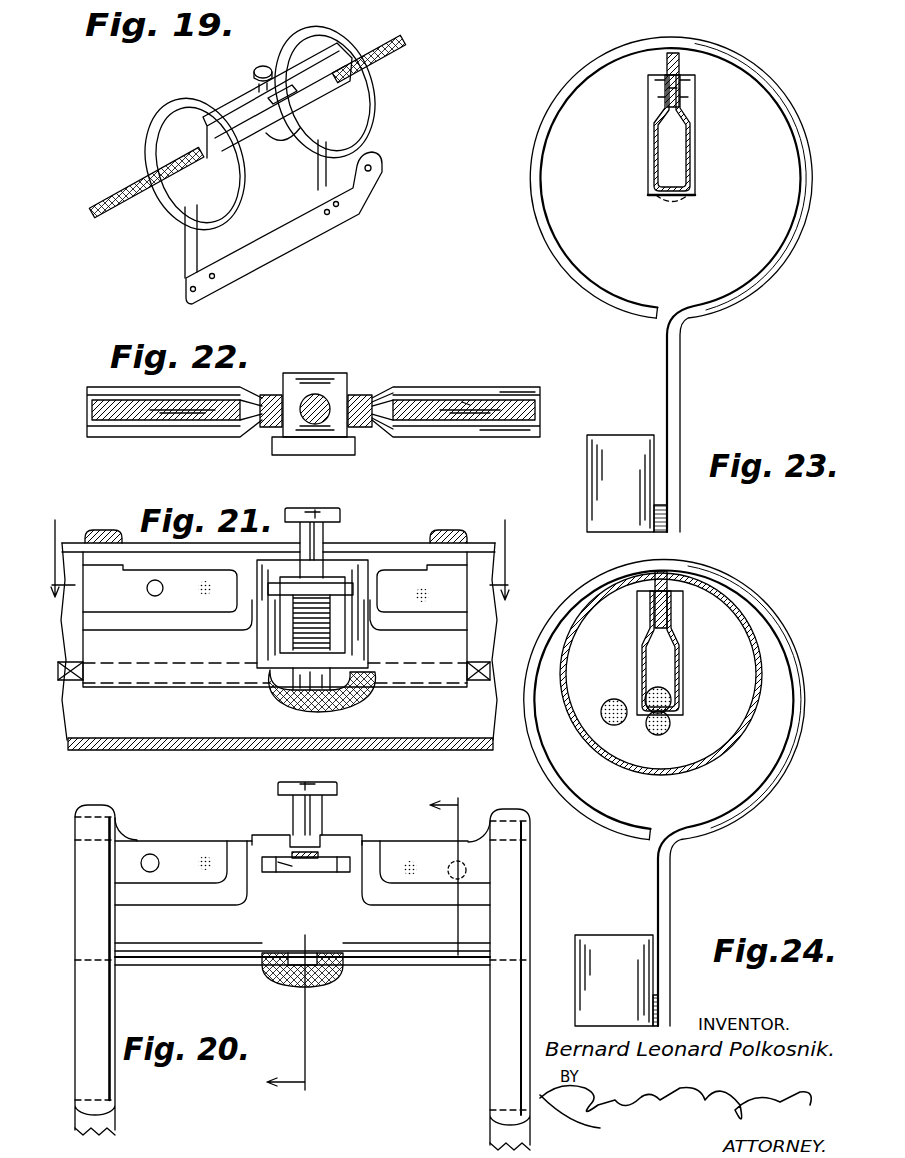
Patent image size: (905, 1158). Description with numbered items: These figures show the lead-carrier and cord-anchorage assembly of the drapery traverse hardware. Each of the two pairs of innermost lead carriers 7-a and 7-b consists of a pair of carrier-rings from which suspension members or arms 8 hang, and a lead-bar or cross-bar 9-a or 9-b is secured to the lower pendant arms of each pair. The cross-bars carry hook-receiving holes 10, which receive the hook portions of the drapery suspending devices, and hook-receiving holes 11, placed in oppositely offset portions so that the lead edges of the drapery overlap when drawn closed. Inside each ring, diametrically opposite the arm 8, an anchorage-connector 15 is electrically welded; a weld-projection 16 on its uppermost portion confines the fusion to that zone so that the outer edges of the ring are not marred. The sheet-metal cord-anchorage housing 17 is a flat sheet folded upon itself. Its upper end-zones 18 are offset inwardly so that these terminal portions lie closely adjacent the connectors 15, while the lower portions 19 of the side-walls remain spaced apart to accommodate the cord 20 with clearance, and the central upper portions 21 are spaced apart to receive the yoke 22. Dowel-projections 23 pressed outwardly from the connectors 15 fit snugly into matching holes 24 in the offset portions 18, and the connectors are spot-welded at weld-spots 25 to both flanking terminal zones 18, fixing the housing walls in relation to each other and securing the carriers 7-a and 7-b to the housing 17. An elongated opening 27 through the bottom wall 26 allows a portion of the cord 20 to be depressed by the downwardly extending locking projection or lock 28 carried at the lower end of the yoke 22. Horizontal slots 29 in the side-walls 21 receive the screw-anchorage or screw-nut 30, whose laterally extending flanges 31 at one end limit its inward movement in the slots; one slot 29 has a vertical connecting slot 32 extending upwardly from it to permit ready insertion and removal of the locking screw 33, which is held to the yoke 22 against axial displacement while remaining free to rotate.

In FIG. 21, the lead carrier 7-a is at (104, 530).
In FIG. 20, the lead carrier 7-a is at (97, 810).
In FIG. 19, the lead carrier 7-b is at (160, 110).
In FIG. 20, the suspension member or arm 8 is at (97, 1121).
In FIG. 23, the suspension member or arm 8 is at (676, 378).
In FIG. 24, the suspension member or arm 8 is at (664, 890).
In FIG. 24, the lead-bar or cross-bar 9-a is at (652, 935).
In FIG. 19, the lead-bar or cross-bar 9-b is at (294, 243).
In FIG. 19, the hook-receiving holes 10 is at (215, 277).
In FIG. 19, the hook-receiving holes 11 is at (372, 171).
In FIG. 22, the anchorage-connector 15 is at (90, 405).
In FIG. 23, the weld-projection 16 is at (672, 53).
In FIG. 19, the cord-anchorage housing 17 is at (240, 143).
In FIG. 21, the cord-anchorage housing 17 is at (398, 555).
In FIG. 20, the cord-anchorage housing 17 is at (420, 974).
In FIG. 23, the cord-anchorage housing 17 is at (708, 193).
In FIG. 22, the upper end-zones or terminal portions 18 is at (520, 398).
In FIG. 23, the upper end-zones or terminal portions 18 is at (660, 82).
In FIG. 22, the lower portions of the side-walls 19 is at (487, 440).
In FIG. 23, the lower portions of the side-walls 19 is at (647, 162).
In FIG. 19, the cord 20 is at (400, 50).
In FIG. 20, the cord 20 is at (320, 983).
In FIG. 24, the cord 20 is at (665, 697).
In FIG. 22, the central upper portions of the side-walls 21 is at (380, 389).
In FIG. 19, the yoke 22 is at (258, 80).
In FIG. 22, the yoke 22 is at (274, 394).
In FIG. 21, the yoke 22 is at (287, 549).
In FIG. 22, the dowel-projections 23 is at (465, 409).
In FIG. 20, the dowel-projections 23 is at (158, 858).
In FIG. 23, the dowel-projections 23 is at (687, 92).
In FIG. 22, the matching holes 24 is at (155, 425).
In FIG. 21, the matching holes 24 is at (147, 590).
In FIG. 20, the matching holes 24 is at (148, 855).
In FIG. 22, the weld-spots 25 is at (220, 423).
In FIG. 21, the weld-spots 25 is at (208, 598).
In FIG. 20, the bottom wall 26 is at (191, 966).
In FIG. 20, the elongated opening 27 is at (337, 955).
In FIG. 23, the elongated opening 27 is at (672, 206).
In FIG. 24, the elongated opening 27 is at (668, 718).
In FIG. 21, the locking projection or lock 28 is at (311, 692).
In FIG. 22, the horizontal slots 29 is at (351, 394).
In FIG. 20, the horizontal slots 29 is at (290, 874).
In FIG. 19, the screw-anchorage or screw-nut 30 is at (282, 100).
In FIG. 22, the screw-anchorage or screw-nut 30 is at (317, 372).
In FIG. 20, the screw-anchorage or screw-nut 30 is at (330, 873).
In FIG. 22, the flanges or projections 31 is at (270, 450).
In FIG. 20, the vertical connecting slot 32 is at (287, 840).
In FIG. 22, the locking screw 33 is at (318, 420).
In FIG. 21, the locking screw 33 is at (313, 545).
In FIG. 20, the locking screw 33 is at (322, 816).